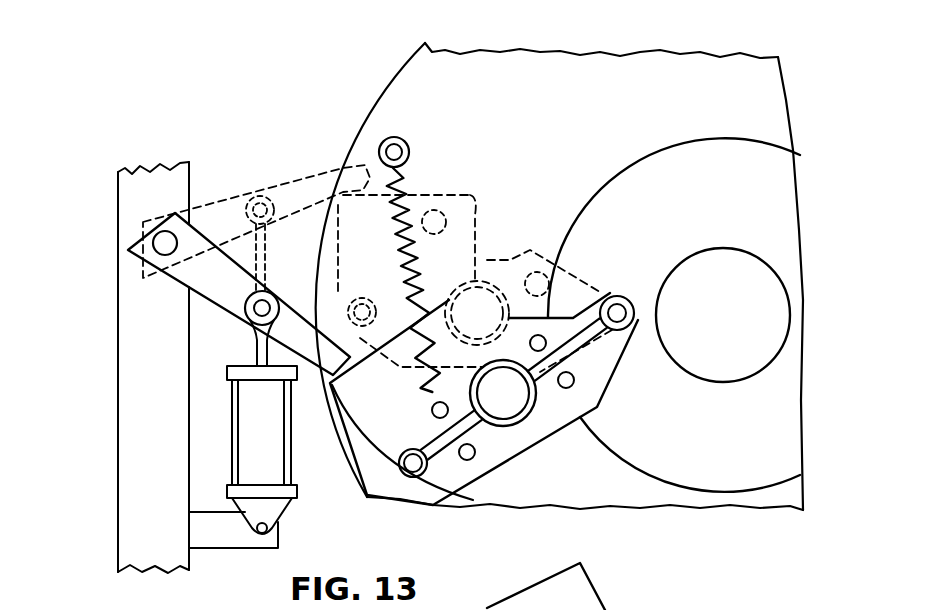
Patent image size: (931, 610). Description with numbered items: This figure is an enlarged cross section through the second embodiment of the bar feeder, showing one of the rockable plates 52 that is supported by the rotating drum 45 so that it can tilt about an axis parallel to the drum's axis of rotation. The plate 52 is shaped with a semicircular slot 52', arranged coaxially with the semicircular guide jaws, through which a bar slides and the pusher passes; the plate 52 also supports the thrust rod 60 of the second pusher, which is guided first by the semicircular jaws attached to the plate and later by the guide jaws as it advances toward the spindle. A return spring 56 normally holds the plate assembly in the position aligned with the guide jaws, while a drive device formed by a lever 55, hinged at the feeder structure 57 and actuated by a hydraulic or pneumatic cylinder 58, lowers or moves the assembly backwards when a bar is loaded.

The rotating drum 45 is at (747, 190).
The rockable plate 52 is at (475, 332).
The semicircular slot 52' is at (523, 238).
The lever 55 is at (210, 272).
The return spring 56 is at (368, 428).
The structure 57 is at (152, 346).
The hydraulic or pneumatic cylinder 58 is at (255, 442).
The thrust rod 60 is at (515, 425).